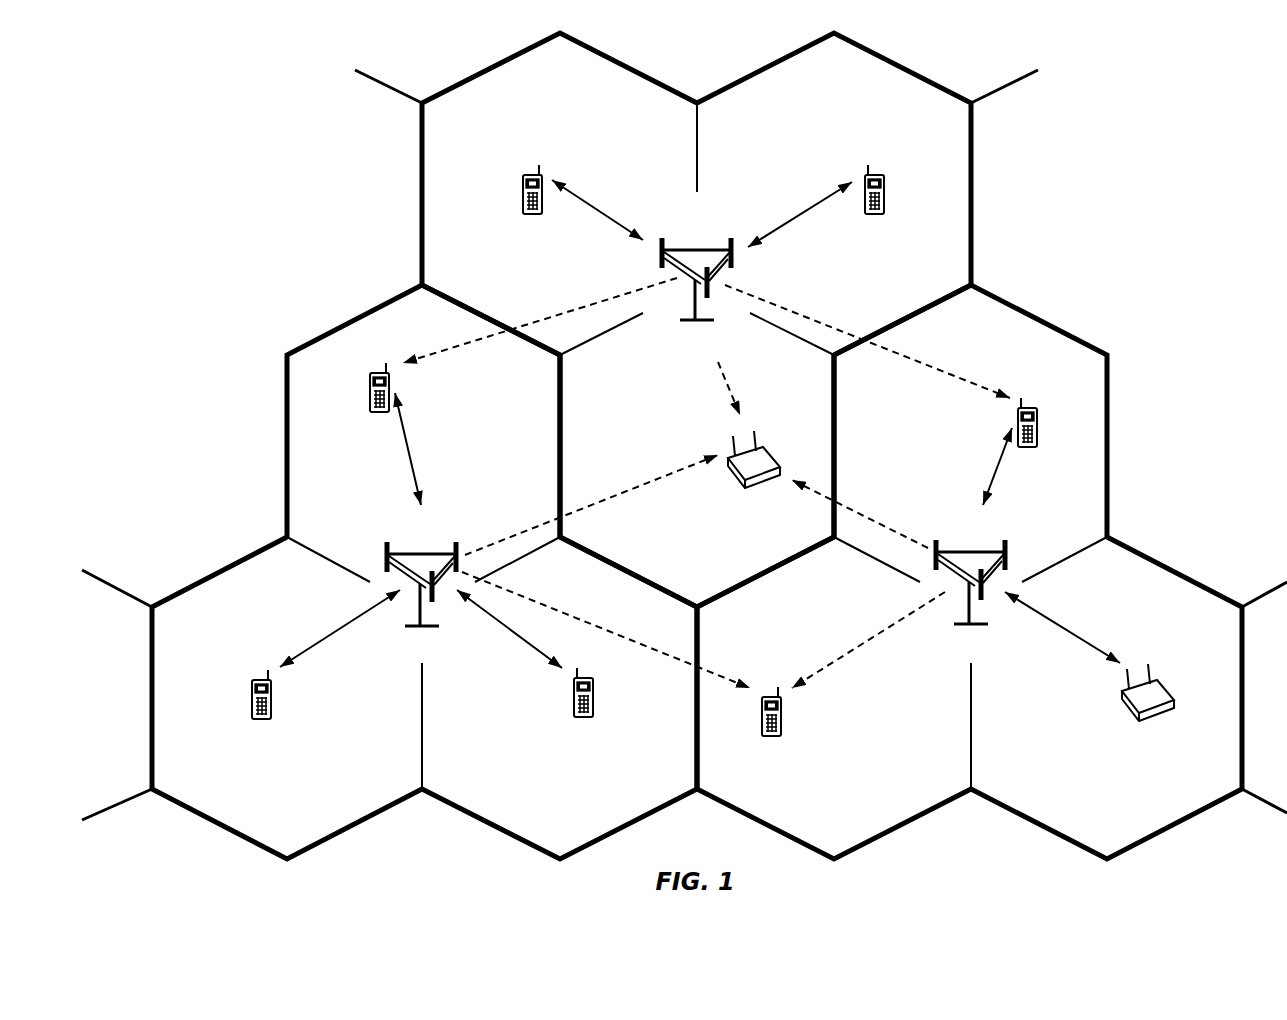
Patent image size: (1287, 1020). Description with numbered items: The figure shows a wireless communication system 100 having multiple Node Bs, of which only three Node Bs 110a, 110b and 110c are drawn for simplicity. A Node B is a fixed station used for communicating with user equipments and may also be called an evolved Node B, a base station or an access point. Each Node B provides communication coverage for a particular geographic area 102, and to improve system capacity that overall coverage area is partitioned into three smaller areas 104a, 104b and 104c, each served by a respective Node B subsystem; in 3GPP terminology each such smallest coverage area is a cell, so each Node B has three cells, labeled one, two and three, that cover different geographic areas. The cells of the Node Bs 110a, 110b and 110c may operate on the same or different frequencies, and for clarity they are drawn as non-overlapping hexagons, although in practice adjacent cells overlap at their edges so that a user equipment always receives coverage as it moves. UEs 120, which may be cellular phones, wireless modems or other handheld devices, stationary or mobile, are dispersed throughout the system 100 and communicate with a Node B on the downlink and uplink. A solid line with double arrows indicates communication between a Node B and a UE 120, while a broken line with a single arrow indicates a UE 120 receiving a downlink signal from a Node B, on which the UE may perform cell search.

The wireless communication system 100 is at (285, 67).
The geographic area 102 is at (972, 194).
The smaller area 104a is at (401, 323).
The smaller area 104b is at (436, 278).
The smaller area 104c is at (676, 585).
The Node B 110a is at (687, 250).
The Node B 110b is at (415, 551).
The Node B 110c is at (962, 555).
The UE 120 is at (522, 188).